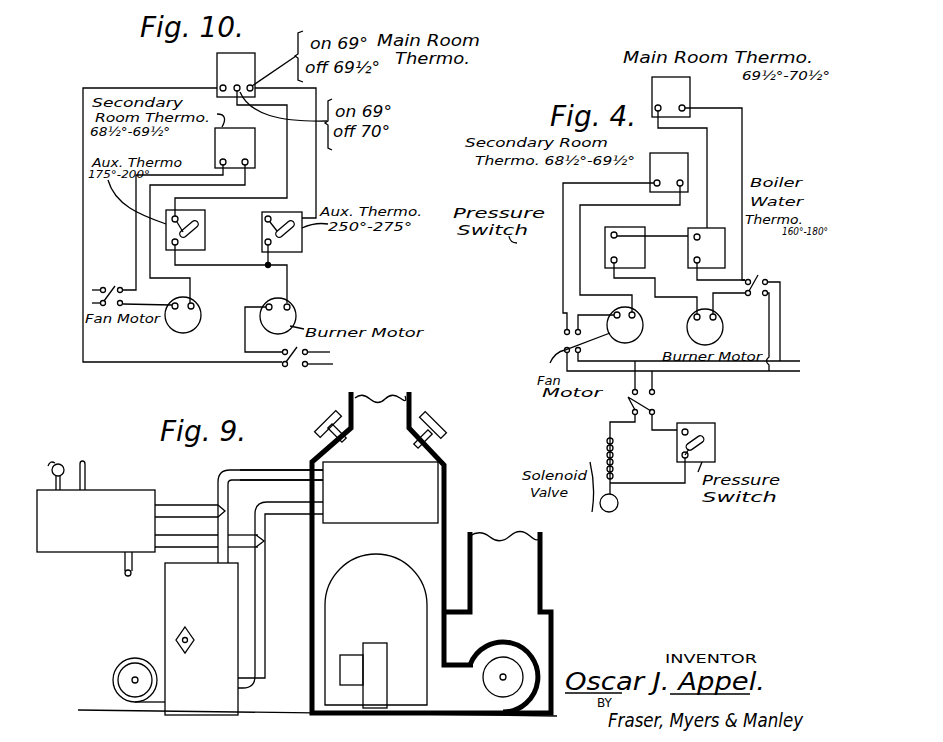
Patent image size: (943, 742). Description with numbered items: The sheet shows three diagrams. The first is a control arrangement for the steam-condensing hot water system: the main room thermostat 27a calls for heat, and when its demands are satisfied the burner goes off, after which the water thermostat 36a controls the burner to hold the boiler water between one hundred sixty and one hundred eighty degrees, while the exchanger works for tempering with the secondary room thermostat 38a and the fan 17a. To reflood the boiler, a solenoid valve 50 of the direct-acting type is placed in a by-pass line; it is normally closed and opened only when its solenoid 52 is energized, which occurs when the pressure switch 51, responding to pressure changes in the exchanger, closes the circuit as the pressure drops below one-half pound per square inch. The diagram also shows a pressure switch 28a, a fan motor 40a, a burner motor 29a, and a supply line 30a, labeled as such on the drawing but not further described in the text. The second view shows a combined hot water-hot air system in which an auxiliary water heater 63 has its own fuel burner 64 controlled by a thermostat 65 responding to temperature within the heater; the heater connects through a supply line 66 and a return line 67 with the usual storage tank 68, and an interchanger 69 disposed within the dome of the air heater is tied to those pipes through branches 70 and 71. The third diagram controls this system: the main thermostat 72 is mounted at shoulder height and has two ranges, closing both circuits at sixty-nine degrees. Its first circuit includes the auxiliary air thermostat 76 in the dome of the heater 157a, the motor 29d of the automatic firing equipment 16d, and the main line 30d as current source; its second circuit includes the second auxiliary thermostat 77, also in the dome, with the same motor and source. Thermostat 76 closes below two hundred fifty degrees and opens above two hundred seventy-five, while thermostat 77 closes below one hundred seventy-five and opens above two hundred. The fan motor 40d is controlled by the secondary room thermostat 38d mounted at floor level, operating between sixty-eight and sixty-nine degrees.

In FIG. 10, the main thermostat 72 is at (217, 62).
In FIG. 10, the secondary room thermostat 38d is at (215, 142).
In FIG. 10, the second auxiliary thermostat 77 is at (204, 244).
In FIG. 9, the second auxiliary thermostat 77 is at (437, 421).
In FIG. 10, the auxiliary air thermostat 76 is at (302, 243).
In FIG. 9, the auxiliary air thermostat 76 is at (320, 408).
In FIG. 10, the fan motor 40d is at (170, 313).
In FIG. 10, the motor 29d is at (285, 318).
In FIG. 10, the main line 30d is at (322, 353).
In FIG. 4, the fan 17a is at (752, 0).
In FIG. 4, the thermostat 27a is at (688, 88).
In FIG. 4, the secondary room thermostat 38a is at (668, 155).
In FIG. 4, the pressure switch 28a is at (612, 247).
In FIG. 4, the water thermostat 36a is at (715, 245).
In FIG. 4, the fan motor 40a is at (637, 327).
In FIG. 4, the burner motor 29a is at (711, 343).
In FIG. 4, the line switch 30a is at (720, 372).
In FIG. 4, the solenoid 52 is at (619, 455).
In FIG. 4, the pressure switch 51 is at (715, 442).
In FIG. 4, the solenoid valve 50 is at (618, 503).
In FIG. 9, the storage tank 68 is at (96, 518).
In FIG. 9, the hot water supply pipe 66 is at (218, 560).
In FIG. 9, the branch 70 is at (266, 460).
In FIG. 9, the branch 71 is at (268, 502).
In FIG. 9, the return pipe 67 is at (265, 613).
In FIG. 9, the auxiliary water heater 63 is at (201, 639).
In FIG. 9, the thermostat 65 is at (190, 633).
In FIG. 9, the fuel burner 64 is at (131, 666).
In FIG. 9, the heater 157a is at (447, 498).
In FIG. 9, the interchanger 69 is at (380, 492).
In FIG. 9, the automatic firing equipment 16d is at (385, 652).